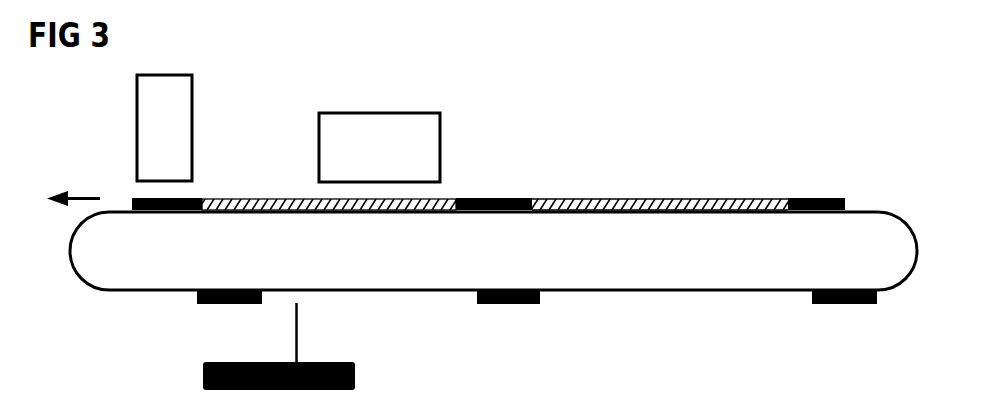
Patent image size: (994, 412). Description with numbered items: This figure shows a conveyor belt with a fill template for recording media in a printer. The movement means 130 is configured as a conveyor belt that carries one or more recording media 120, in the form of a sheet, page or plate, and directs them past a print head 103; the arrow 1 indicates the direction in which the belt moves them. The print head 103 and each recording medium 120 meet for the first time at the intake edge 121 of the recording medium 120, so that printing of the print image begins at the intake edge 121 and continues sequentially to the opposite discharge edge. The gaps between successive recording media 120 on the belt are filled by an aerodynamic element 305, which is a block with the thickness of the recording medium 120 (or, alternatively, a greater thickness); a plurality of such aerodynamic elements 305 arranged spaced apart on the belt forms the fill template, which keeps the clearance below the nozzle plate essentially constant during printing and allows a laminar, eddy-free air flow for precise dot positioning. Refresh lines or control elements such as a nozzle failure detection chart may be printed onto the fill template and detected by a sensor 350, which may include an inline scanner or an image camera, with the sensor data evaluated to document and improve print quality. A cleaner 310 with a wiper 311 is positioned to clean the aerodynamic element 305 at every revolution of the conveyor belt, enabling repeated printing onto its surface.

The conveying direction 1 is at (80, 194).
The print head 103 is at (440, 124).
The recording medium 120 is at (255, 200).
The intake edge 121 is at (530, 200).
The movement means 130 is at (637, 290).
The aerodynamic element 305 is at (462, 200).
The cleaner 310 is at (355, 377).
The wiper 311 is at (298, 341).
The sensor 350 is at (192, 115).